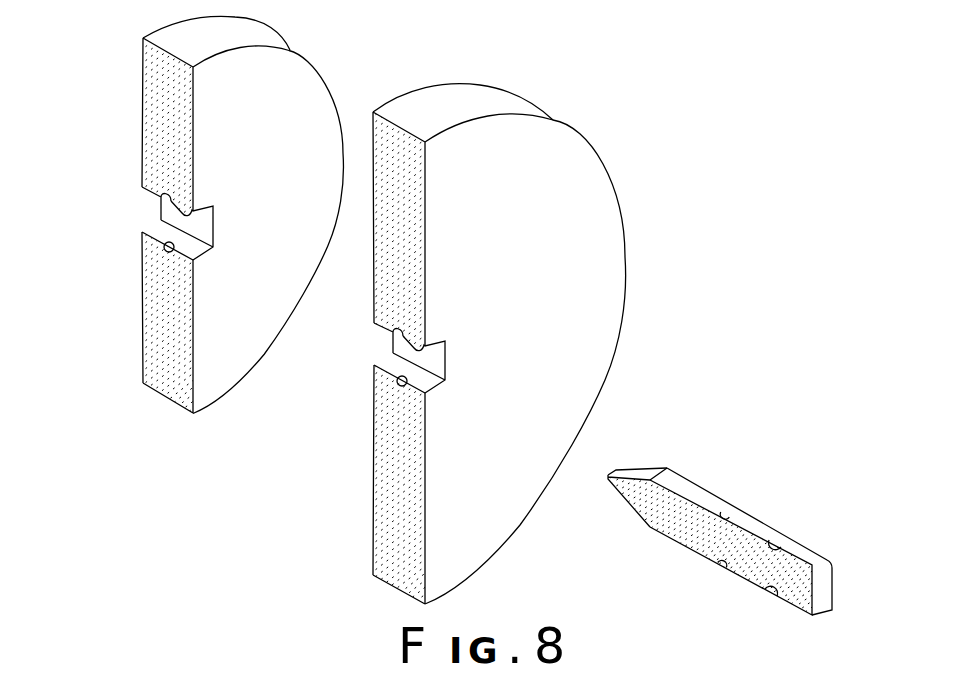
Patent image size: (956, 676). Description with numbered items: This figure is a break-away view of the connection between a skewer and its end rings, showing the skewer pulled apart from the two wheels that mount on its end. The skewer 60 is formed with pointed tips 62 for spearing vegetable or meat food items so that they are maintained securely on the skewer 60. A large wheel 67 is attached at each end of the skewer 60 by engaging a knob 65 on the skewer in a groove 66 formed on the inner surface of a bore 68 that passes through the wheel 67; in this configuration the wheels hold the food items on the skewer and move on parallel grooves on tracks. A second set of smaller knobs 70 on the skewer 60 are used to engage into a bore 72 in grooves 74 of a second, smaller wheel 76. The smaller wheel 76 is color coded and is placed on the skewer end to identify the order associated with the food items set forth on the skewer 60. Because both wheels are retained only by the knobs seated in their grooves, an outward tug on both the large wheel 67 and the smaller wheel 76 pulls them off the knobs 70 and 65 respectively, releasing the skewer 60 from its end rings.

The skewer 60 is at (684, 473).
The pointed tip 62 is at (617, 470).
The knob 65 is at (782, 543).
The groove 66 is at (392, 339).
The large wheel 67 is at (583, 190).
The bore 68 is at (433, 362).
The smaller knob 70 is at (728, 514).
The bore 72 is at (203, 232).
The groove 74 is at (162, 212).
The smaller wheel 76 is at (313, 110).